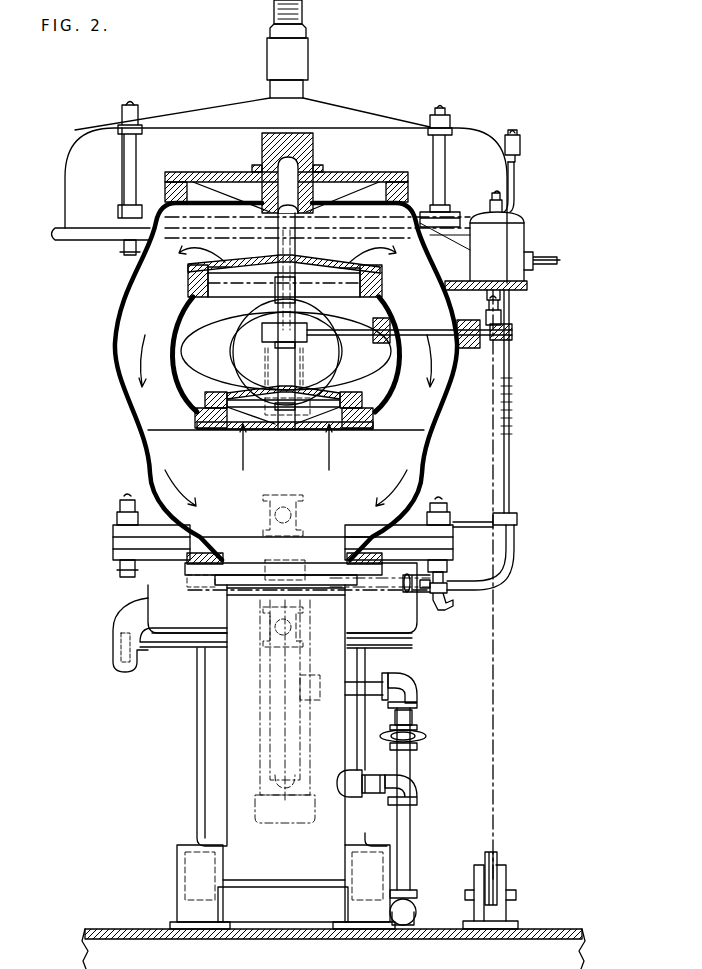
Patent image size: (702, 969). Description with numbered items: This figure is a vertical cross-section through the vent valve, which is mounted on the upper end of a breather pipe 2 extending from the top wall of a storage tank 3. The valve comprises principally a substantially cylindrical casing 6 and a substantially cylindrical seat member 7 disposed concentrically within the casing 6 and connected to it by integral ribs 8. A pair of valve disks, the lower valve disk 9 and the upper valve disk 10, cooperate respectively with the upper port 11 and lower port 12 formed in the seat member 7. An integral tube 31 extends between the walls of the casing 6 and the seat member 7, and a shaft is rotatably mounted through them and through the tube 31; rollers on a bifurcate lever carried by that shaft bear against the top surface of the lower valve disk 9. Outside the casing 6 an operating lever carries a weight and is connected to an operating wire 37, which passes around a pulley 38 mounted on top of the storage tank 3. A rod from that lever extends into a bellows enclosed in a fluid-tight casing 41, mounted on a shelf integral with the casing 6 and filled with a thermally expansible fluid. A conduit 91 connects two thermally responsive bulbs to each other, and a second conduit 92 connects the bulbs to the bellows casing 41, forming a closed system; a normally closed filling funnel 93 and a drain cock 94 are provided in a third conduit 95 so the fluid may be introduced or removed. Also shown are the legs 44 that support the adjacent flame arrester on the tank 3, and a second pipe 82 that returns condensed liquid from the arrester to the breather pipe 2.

The breather pipe 2 is at (227, 796).
The storage tank 3 is at (112, 928).
The casing 6 is at (127, 418).
The seat member 7 is at (392, 406).
The ribs 8 is at (165, 418).
The lower valve disk 9 is at (314, 392).
The upper valve disk 10 is at (284, 253).
The upper port 11 is at (334, 432).
The lower port 12 is at (190, 300).
The integral tube 31 is at (420, 327).
The operating wire 37 is at (497, 697).
The pulley 38 is at (500, 862).
The fluid-tight casing 41 is at (518, 230).
The legs 44 is at (202, 725).
The second pipe 82 is at (415, 912).
The conduit 91 is at (518, 465).
The second conduit 92 is at (564, 265).
The filling funnel 93 is at (523, 140).
The drain cock 94 is at (450, 606).
The third conduit 95 is at (521, 190).